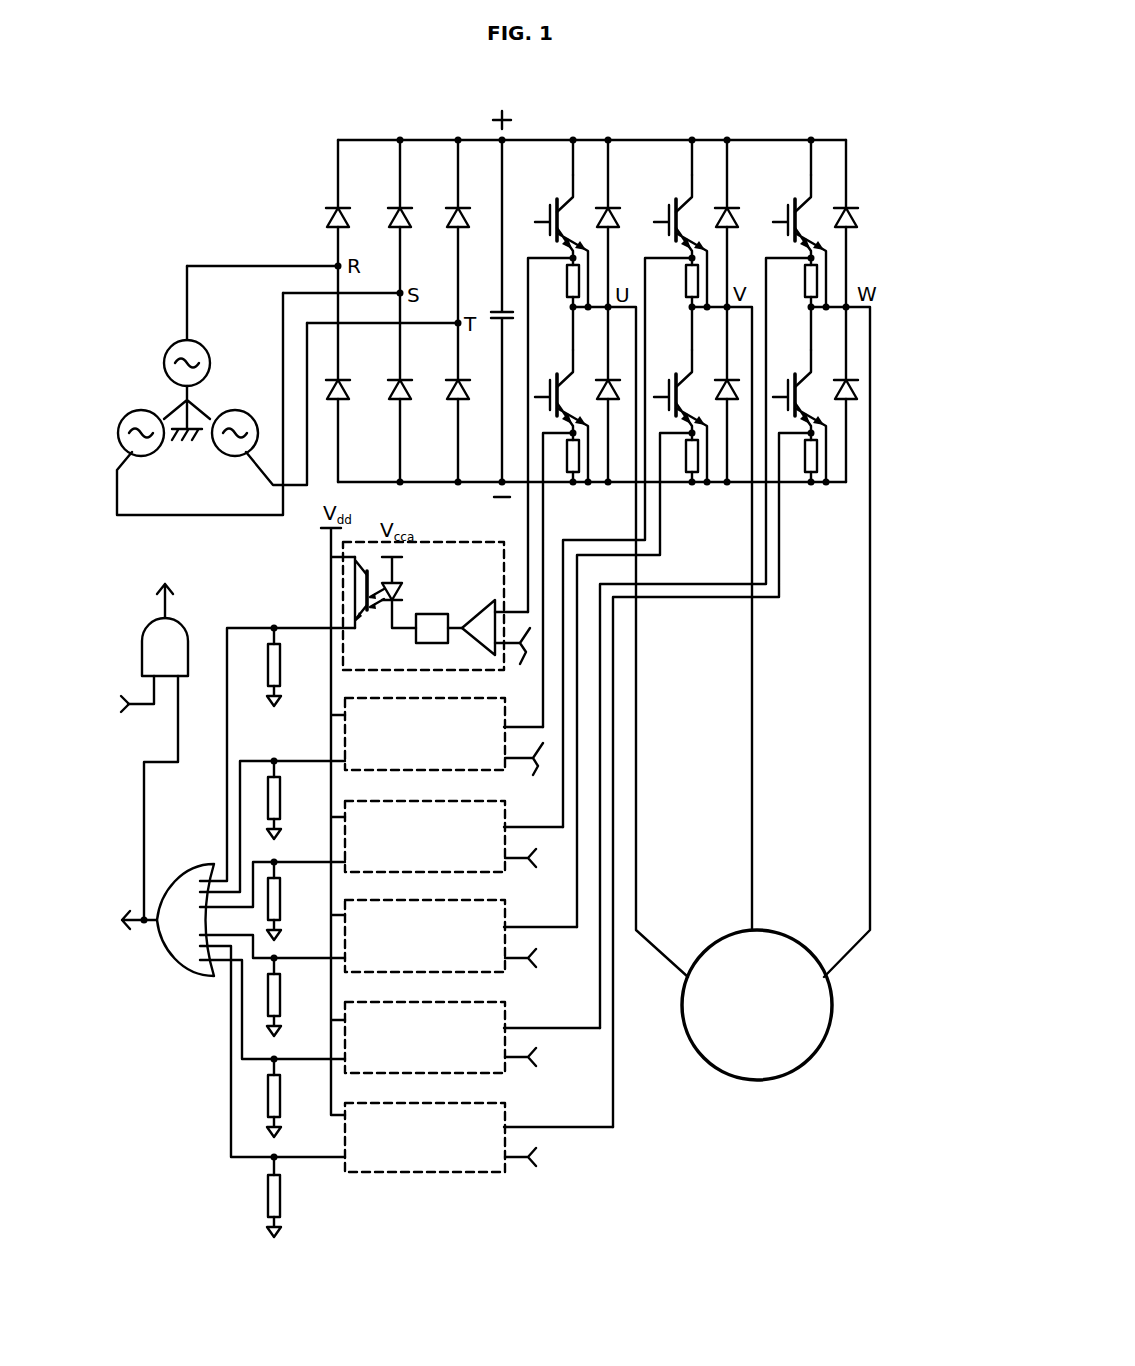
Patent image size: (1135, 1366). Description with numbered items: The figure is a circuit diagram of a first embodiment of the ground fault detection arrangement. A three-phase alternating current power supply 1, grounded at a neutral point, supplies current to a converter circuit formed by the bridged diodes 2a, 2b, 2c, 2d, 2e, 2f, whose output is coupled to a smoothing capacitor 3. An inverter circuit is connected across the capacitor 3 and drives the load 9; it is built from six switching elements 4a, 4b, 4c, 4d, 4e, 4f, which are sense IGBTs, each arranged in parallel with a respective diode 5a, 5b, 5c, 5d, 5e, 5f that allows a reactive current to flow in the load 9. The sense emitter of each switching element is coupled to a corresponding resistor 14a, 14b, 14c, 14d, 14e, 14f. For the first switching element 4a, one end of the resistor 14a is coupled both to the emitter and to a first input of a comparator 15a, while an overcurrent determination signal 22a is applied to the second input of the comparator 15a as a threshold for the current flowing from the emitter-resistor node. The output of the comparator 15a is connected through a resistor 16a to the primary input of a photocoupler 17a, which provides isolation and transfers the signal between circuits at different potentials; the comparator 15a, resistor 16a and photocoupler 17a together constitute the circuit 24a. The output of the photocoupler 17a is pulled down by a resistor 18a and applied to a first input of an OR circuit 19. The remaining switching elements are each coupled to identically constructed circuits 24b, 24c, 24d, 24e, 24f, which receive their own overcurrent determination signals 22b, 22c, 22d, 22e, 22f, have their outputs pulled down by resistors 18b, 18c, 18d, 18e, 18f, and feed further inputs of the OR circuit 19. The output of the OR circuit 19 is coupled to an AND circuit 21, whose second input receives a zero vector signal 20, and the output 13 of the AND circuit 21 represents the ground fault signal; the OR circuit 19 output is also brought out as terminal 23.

The three-phase alternating current power supply 1 is at (163, 350).
The bridged diode 2a is at (328, 217).
The bridged diode 2b is at (390, 217).
The bridged diode 2c is at (448, 217).
The bridged diode 2d is at (334, 389).
The bridged diode 2e is at (396, 389).
The bridged diode 2f is at (454, 389).
The smoothing capacitor 3 is at (500, 311).
The switching element 4a is at (549, 217).
The switching element 4b is at (668, 217).
The switching element 4c is at (787, 217).
The switching element 4d is at (552, 392).
The switching element 4e is at (671, 392).
The switching element 4f is at (790, 392).
The diode 5a is at (618, 214).
The diode 5b is at (737, 214).
The diode 5c is at (849, 216).
The diode 5d is at (602, 385).
The diode 5e is at (722, 384).
The diode 5f is at (840, 384).
The load 9 is at (705, 1060).
The output of the AND circuit 13 is at (165, 588).
The resistor 14a is at (566, 275).
The resistor 14b is at (685, 275).
The resistor 14c is at (804, 274).
The resistor 14d is at (567, 466).
The resistor 14e is at (686, 465).
The resistor 14f is at (804, 465).
The comparator 15a is at (500, 600).
The resistor 16a is at (435, 613).
The photocoupler 17a is at (382, 608).
The resistor 18a is at (283, 645).
The resistor 18b is at (283, 879).
The resistor 18c is at (283, 1077).
The resistor 18d is at (283, 778).
The resistor 18e is at (283, 1005).
The resistor 18f is at (284, 1177).
The OR circuit 19 is at (196, 975).
The zero vector signal 20 is at (112, 708).
The AND circuit 21 is at (183, 625).
The overcurrent determination signal 22a is at (527, 664).
The overcurrent determination signal 22b is at (541, 860).
The overcurrent determination signal 22c is at (541, 1060).
The overcurrent determination signal 22d is at (528, 779).
The overcurrent determination signal 22e is at (541, 961).
The overcurrent determination signal 22f is at (539, 1160).
The overcurrent detection output 23 is at (126, 923).
The circuit 24a is at (503, 543).
The circuit 24b is at (492, 836).
The circuit 24c is at (492, 1041).
The circuit 24d is at (425, 734).
The circuit 24e is at (493, 938).
The circuit 24f is at (490, 1143).